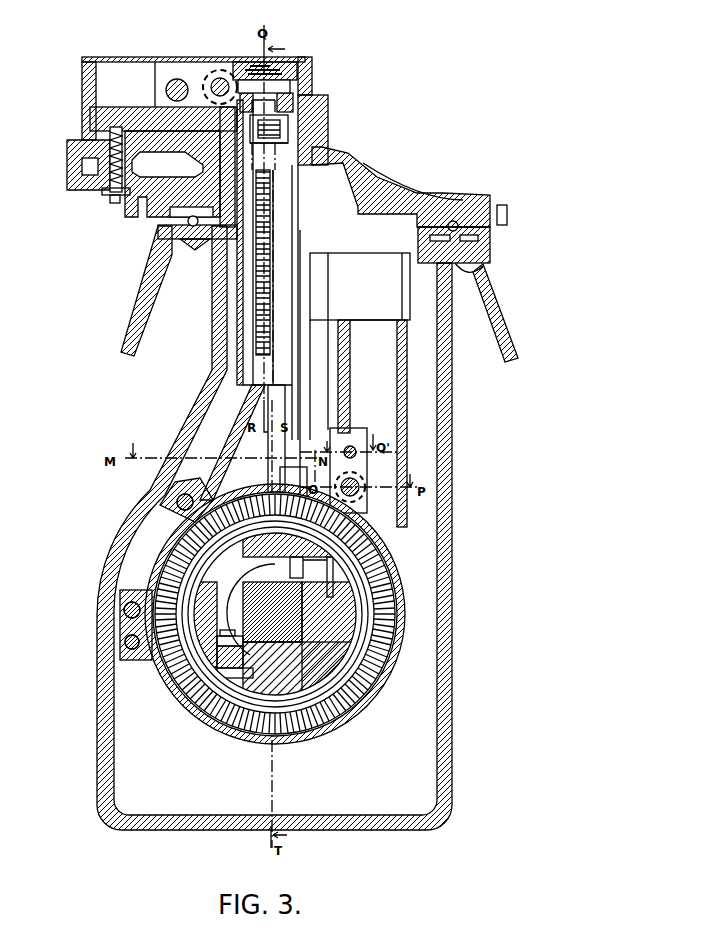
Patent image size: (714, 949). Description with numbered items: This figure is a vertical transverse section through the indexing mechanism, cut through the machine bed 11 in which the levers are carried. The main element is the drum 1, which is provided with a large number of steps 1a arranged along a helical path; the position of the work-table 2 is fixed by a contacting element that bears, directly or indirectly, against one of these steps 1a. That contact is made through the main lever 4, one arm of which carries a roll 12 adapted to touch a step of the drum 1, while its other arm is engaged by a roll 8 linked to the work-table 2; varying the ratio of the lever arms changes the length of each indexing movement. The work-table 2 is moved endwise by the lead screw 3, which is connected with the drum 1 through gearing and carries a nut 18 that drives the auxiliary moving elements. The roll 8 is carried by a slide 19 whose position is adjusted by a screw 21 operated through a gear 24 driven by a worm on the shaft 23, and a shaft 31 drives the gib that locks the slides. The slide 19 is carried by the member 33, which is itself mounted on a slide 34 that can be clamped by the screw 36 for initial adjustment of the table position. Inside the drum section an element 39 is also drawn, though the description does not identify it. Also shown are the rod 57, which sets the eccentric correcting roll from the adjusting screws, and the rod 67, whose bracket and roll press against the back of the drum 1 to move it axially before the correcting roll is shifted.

The drum 1 is at (373, 525).
The steps 1a is at (374, 558).
The work-table 2 is at (165, 141).
The lead screw 3 is at (360, 486).
The main lever 4 is at (279, 291).
The roll 8 is at (285, 120).
The machine bed 11 is at (448, 683).
The roll 12 is at (270, 505).
The nut 18 is at (358, 428).
The slide 19 is at (250, 143).
The screw 21 is at (258, 335).
The shaft 23 is at (218, 72).
The gear 24 is at (278, 85).
The shaft 31 is at (174, 80).
The member 33 is at (243, 279).
The slide 34 is at (128, 107).
The screw 36 is at (112, 200).
The crank 39 is at (287, 623).
The rod 57 is at (178, 505).
The rod 67 is at (125, 612).